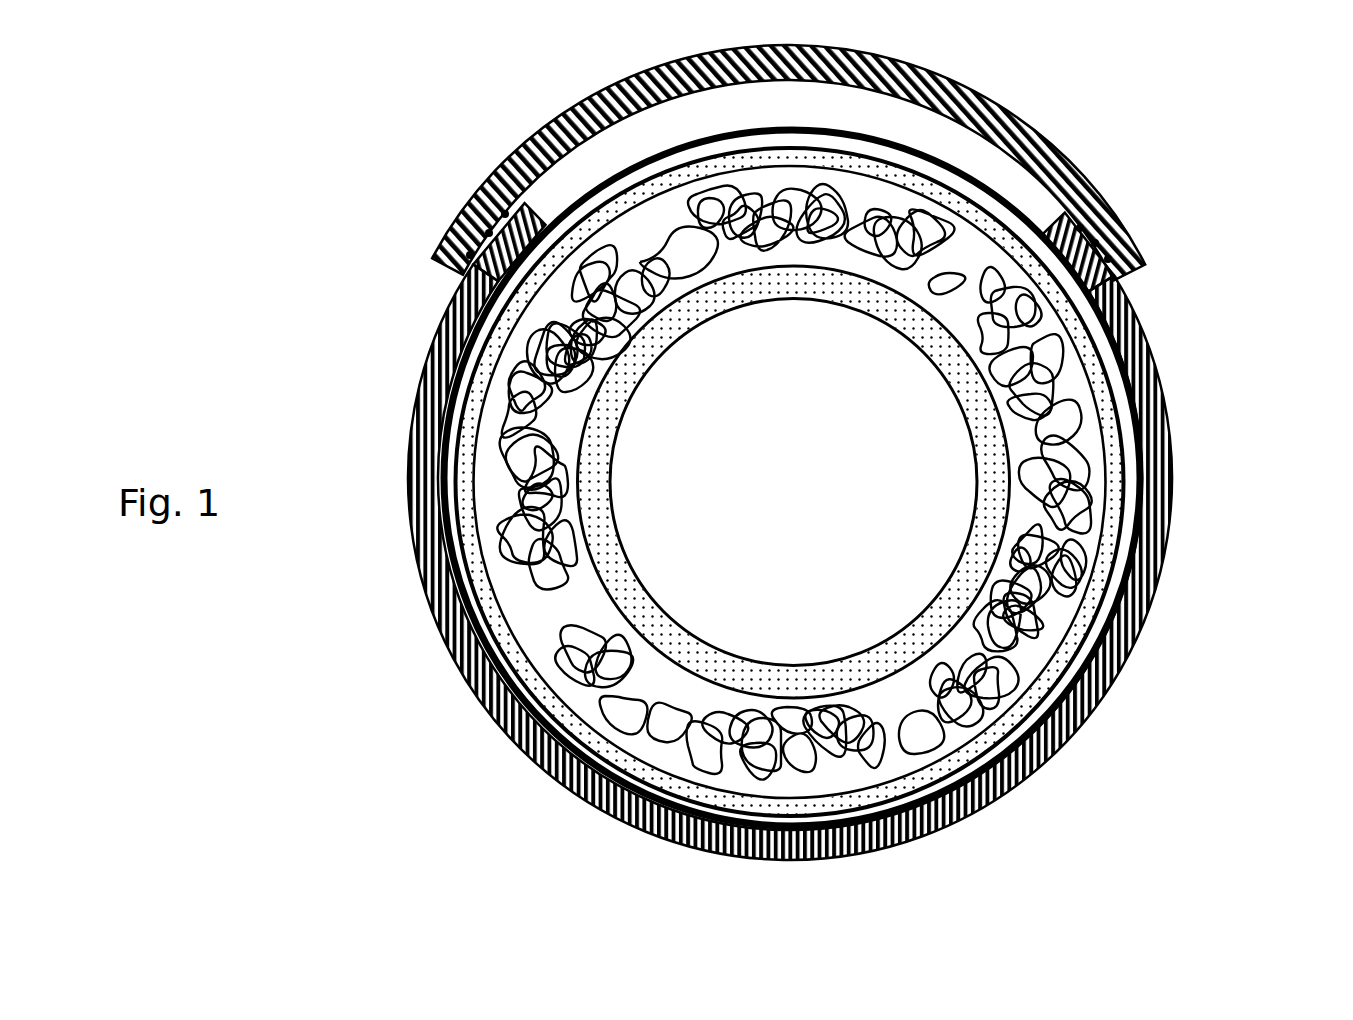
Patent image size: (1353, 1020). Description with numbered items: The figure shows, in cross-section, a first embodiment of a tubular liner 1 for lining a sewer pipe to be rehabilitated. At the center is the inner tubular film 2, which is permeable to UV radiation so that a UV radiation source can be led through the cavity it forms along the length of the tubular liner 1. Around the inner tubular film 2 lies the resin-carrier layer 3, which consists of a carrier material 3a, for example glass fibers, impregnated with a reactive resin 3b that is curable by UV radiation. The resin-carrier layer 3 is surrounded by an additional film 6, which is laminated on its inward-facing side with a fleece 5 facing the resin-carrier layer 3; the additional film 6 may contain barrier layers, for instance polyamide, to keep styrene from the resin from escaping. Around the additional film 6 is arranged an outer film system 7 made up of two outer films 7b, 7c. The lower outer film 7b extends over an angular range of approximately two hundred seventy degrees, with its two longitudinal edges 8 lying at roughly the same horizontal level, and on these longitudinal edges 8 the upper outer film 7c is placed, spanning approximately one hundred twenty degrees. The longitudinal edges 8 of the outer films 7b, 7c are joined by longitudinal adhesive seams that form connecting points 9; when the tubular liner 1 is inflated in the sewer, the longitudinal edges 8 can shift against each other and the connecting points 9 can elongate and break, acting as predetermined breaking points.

The tubular liner 1 is at (290, 232).
The inner tubular film 2 is at (712, 662).
The resin-carrier layer 3 is at (924, 482).
The carrier material 3a is at (635, 267).
The reactive resin 3b is at (592, 325).
The fleece 5 is at (530, 675).
The additional film 6 is at (478, 623).
The outer film system 7 is at (846, 452).
The lower outer film 7b is at (806, 478).
The upper outer film 7c is at (1000, 117).
The longitudinal edges 8 is at (465, 206).
The connecting points 9 is at (465, 268).